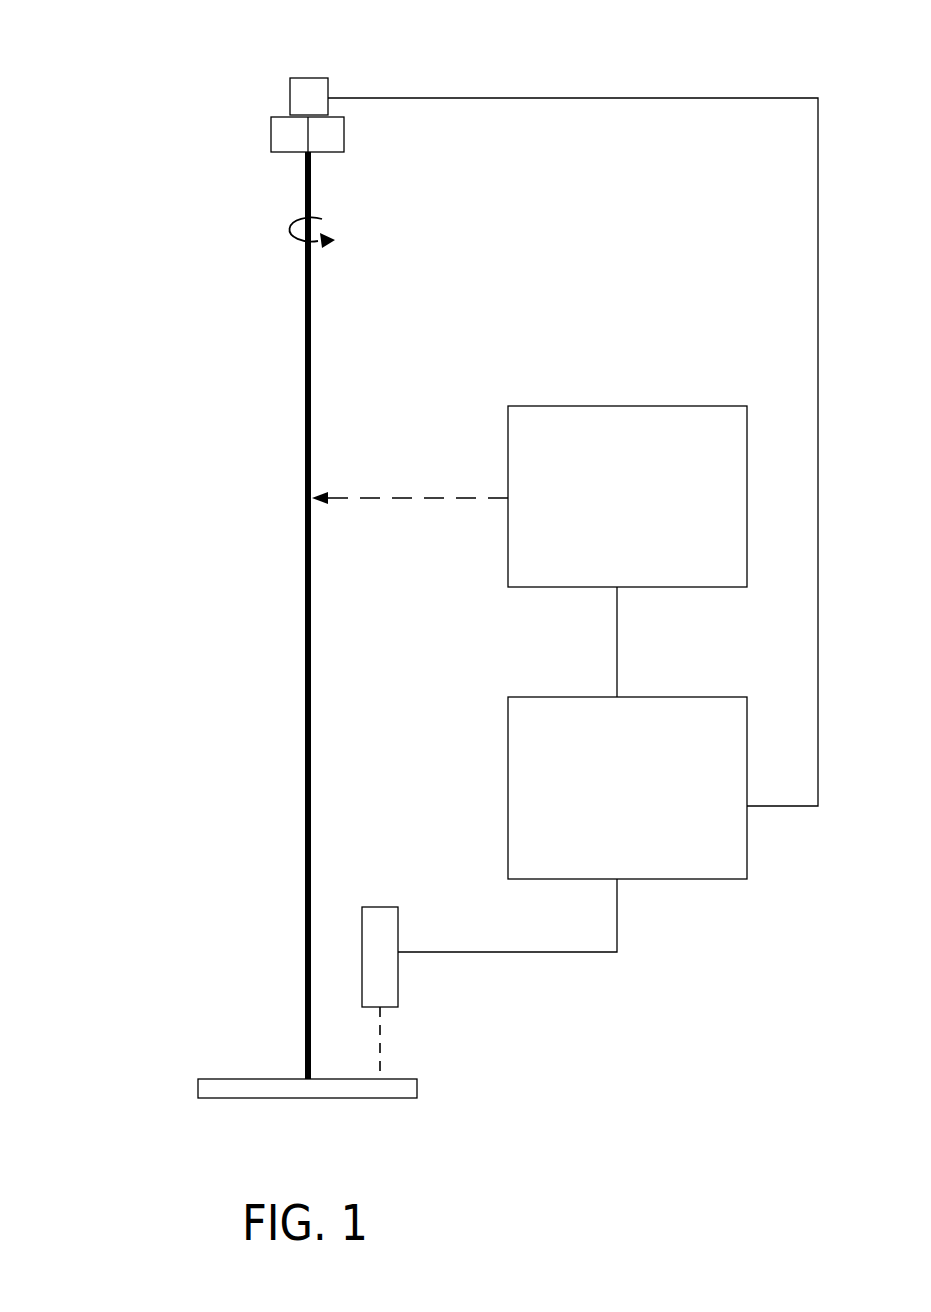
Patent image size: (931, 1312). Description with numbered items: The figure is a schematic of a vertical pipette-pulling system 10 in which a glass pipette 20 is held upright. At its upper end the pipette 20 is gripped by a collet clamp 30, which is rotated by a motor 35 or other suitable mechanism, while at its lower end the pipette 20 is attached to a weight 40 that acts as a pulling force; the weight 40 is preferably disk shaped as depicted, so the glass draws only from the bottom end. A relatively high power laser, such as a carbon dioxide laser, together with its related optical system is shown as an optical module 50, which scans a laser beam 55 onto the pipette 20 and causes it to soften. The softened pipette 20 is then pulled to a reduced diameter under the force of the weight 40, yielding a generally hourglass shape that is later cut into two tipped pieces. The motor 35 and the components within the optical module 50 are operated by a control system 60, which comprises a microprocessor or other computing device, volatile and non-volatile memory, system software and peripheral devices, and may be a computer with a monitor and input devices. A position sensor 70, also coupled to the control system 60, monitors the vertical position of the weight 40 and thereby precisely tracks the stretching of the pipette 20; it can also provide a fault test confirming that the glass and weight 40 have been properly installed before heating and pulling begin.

The system 10 is at (138, 243).
The pipette 20 is at (305, 627).
The collet clamp 30 is at (328, 134).
The motor 35 is at (313, 93).
The weight 40 is at (215, 1087).
The optical module 50 is at (627, 496).
The laser beam 55 is at (357, 495).
The control system 60 is at (627, 788).
The position sensor 70 is at (385, 980).